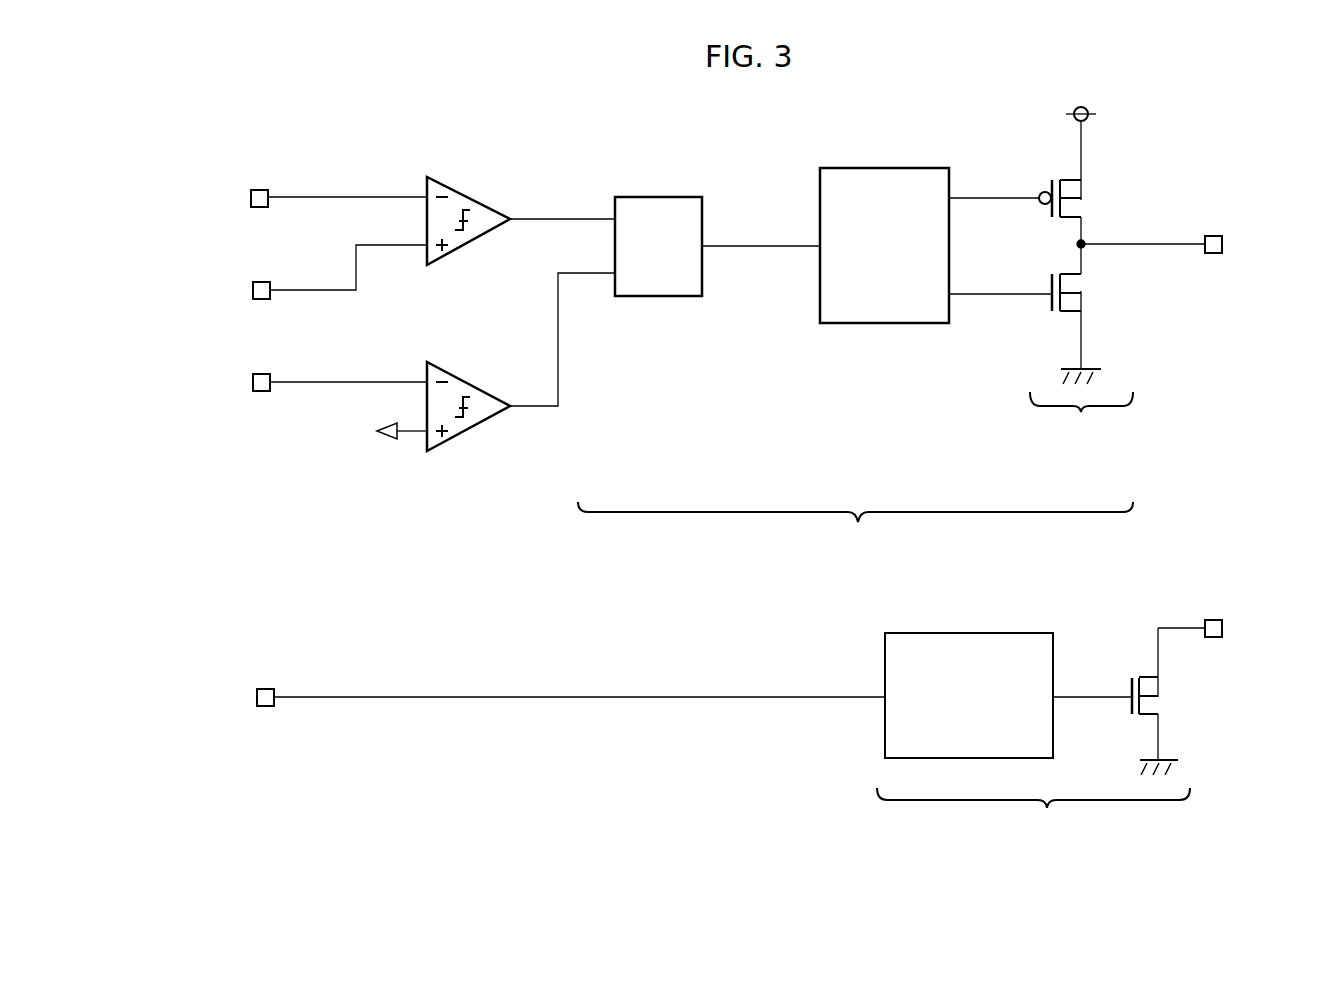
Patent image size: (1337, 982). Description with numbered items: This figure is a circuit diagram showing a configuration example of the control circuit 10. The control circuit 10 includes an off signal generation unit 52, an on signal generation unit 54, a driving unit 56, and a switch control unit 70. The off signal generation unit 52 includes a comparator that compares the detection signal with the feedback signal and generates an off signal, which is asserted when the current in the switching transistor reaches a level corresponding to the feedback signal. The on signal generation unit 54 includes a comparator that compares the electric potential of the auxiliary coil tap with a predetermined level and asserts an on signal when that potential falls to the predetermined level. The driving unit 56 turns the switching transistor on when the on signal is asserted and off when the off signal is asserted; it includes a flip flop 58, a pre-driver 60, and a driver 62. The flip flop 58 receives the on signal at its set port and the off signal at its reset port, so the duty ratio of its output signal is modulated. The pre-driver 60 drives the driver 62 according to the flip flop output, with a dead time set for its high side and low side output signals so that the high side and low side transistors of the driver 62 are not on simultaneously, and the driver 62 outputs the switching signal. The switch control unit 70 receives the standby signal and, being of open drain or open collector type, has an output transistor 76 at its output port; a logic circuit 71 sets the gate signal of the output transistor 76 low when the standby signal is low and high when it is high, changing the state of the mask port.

The control circuit 10 is at (767, 833).
The off signal generation unit 52 is at (456, 191).
The on signal generation unit 54 is at (456, 376).
The driving unit 56 is at (932, 331).
The flip flop 58 is at (655, 197).
The pre-driver 60 is at (888, 168).
The driver 62 is at (1081, 286).
The switch control unit 70 is at (1091, 713).
The logic circuit 71 is at (970, 633).
The output transistor 76 is at (1168, 696).